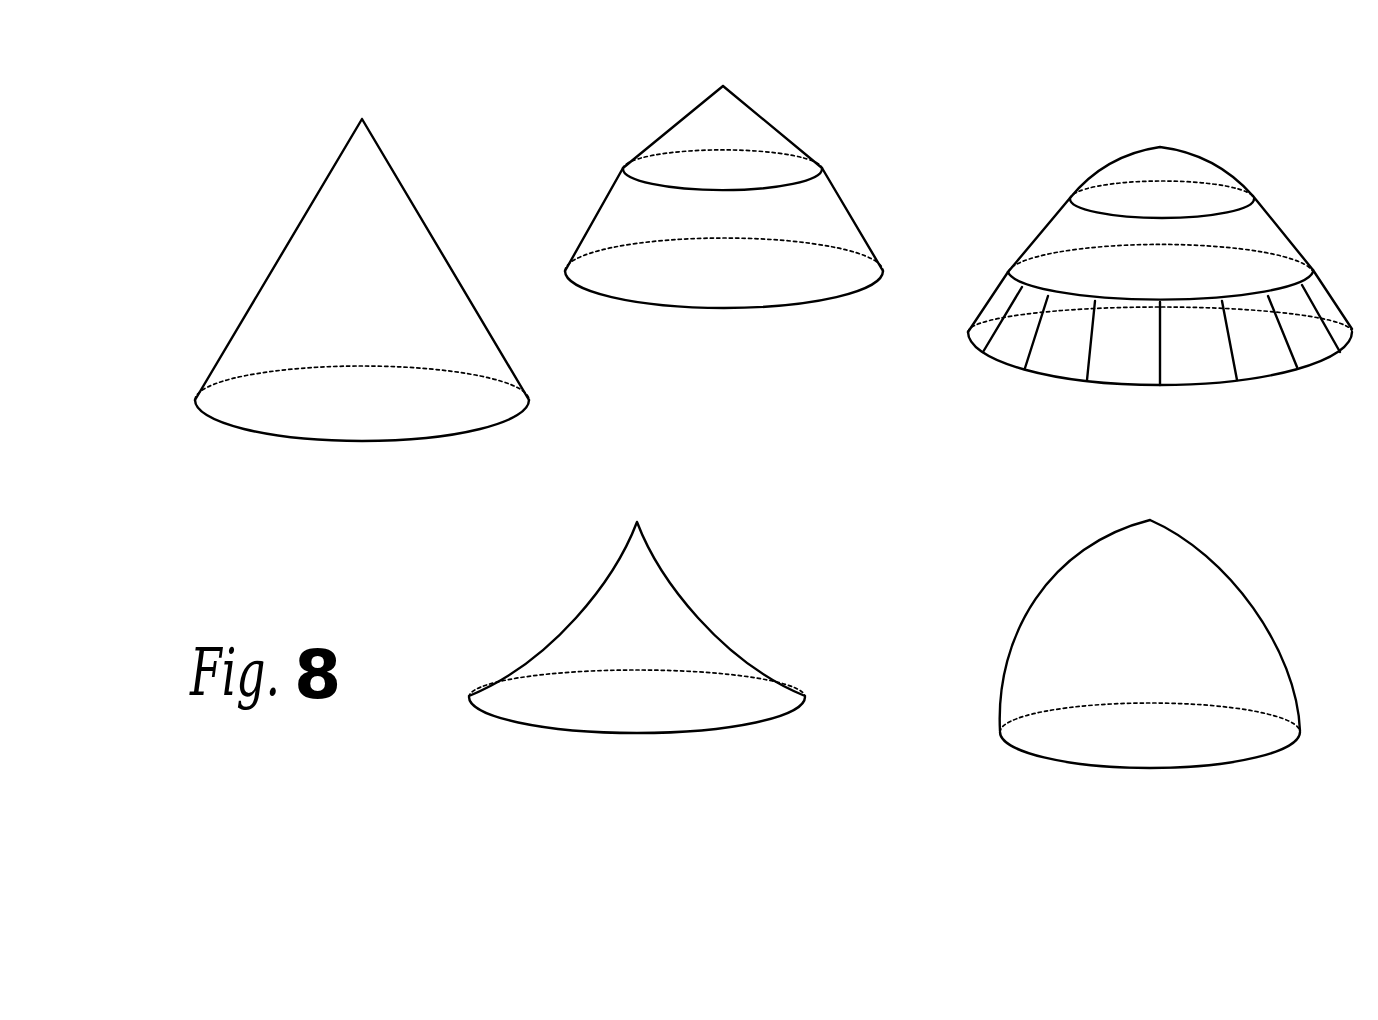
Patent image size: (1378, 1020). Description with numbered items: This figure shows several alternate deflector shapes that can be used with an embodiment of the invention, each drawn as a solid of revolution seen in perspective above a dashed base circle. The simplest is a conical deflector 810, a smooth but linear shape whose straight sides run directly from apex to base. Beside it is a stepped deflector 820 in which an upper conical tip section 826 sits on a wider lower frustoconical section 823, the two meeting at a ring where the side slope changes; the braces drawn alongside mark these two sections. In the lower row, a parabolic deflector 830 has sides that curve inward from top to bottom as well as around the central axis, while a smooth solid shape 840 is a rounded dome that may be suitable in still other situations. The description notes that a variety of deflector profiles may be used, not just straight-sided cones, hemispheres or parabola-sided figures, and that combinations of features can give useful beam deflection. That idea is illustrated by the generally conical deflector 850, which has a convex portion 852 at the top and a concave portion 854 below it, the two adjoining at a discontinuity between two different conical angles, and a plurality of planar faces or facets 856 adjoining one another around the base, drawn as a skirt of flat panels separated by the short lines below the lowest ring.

The conical deflector 810 is at (270, 243).
The stepped conical shield 820 is at (706, 233).
The lower frustoconical section 823 is at (706, 231).
The upper conical tip section 826 is at (715, 129).
The parabolic deflector 830 is at (532, 627).
The smooth solid shape 840 is at (994, 683).
The generally conical deflector 850 is at (1140, 288).
The convex portion 852 is at (1169, 164).
The concave portion 854 is at (1179, 237).
The planar faces or facets 856 is at (1200, 366).